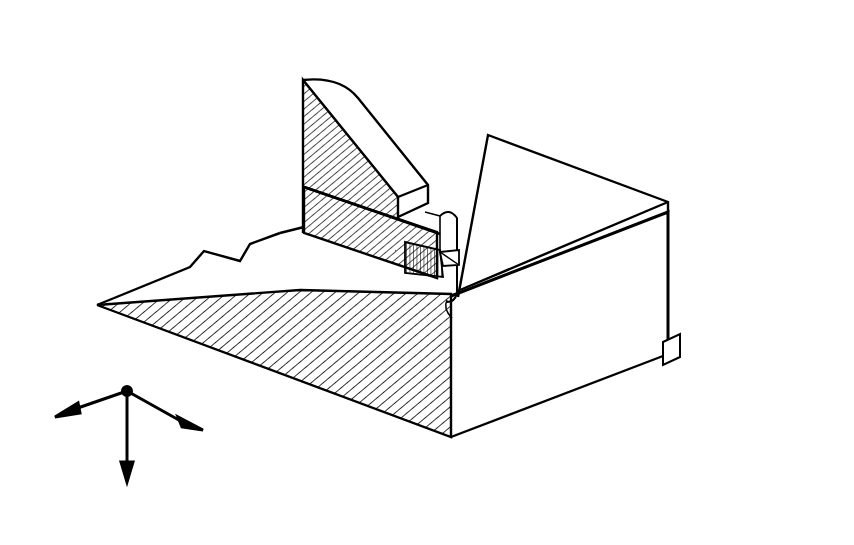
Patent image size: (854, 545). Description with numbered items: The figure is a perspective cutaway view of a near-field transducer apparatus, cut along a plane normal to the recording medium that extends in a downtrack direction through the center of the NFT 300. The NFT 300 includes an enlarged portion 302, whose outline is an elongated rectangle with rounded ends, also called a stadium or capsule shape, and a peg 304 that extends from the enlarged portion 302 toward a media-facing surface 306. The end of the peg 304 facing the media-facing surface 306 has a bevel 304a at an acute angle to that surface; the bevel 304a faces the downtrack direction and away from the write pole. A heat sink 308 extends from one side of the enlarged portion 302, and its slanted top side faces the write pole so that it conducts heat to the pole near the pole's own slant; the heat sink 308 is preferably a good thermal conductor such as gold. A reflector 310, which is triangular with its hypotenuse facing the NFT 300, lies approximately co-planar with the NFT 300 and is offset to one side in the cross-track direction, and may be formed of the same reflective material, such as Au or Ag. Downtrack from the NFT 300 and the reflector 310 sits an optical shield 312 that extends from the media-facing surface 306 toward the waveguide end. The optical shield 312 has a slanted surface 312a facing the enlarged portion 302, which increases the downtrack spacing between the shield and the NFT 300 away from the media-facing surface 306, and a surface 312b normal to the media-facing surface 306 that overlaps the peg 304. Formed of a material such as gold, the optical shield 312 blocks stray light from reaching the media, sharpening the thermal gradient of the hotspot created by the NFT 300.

The near-field transducer (NFT) 300 is at (428, 88).
The enlarged portion 302 is at (303, 201).
The peg 304 is at (455, 210).
The bevel 304a is at (452, 298).
The media-facing surface 306 is at (680, 345).
The heat sink 308 is at (343, 93).
The reflector 310 is at (538, 163).
The optical shield 312 is at (537, 395).
The slanted surface 312a is at (208, 272).
The surface 312b is at (447, 305).